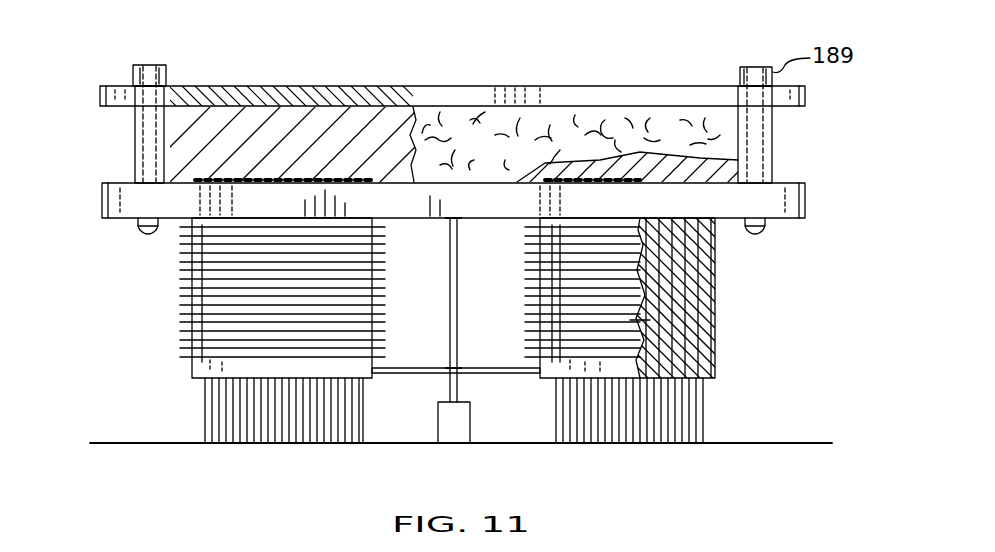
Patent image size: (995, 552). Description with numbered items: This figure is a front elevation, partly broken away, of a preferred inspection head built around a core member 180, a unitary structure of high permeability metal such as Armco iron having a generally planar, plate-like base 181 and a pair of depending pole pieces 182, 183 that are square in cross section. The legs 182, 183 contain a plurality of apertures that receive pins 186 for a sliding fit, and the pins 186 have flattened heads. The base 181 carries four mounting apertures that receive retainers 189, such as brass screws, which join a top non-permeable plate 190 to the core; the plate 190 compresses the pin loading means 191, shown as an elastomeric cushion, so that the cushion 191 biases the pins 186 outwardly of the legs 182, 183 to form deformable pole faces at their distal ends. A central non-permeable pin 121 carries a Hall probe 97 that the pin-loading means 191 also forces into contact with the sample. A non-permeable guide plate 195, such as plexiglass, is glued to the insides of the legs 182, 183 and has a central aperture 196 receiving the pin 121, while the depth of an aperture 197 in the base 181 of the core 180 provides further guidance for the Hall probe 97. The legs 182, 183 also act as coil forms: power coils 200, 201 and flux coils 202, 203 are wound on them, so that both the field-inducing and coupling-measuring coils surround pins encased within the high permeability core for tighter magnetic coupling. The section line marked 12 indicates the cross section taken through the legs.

The section line 12- 12 is at (112, 177).
The Hall probe 97 is at (468, 432).
The central non-permeable pin 121 is at (458, 297).
The core member 180 is at (806, 214).
The base 181 is at (110, 222).
The pole piece 182 is at (192, 372).
The pole piece 183 is at (718, 258).
The pins 186 is at (192, 425).
The retainers 189 is at (165, 72).
The top non-permeable plate 190 is at (645, 94).
The pin loading means 191 is at (564, 94).
The non-permeable guide plate 195 is at (412, 373).
The central aperture 196 is at (450, 368).
The aperture 197 is at (450, 218).
The power coil 200 is at (182, 288).
The power coil 201 is at (530, 322).
The flux coil 202 is at (182, 340).
The flux coil 203 is at (650, 320).